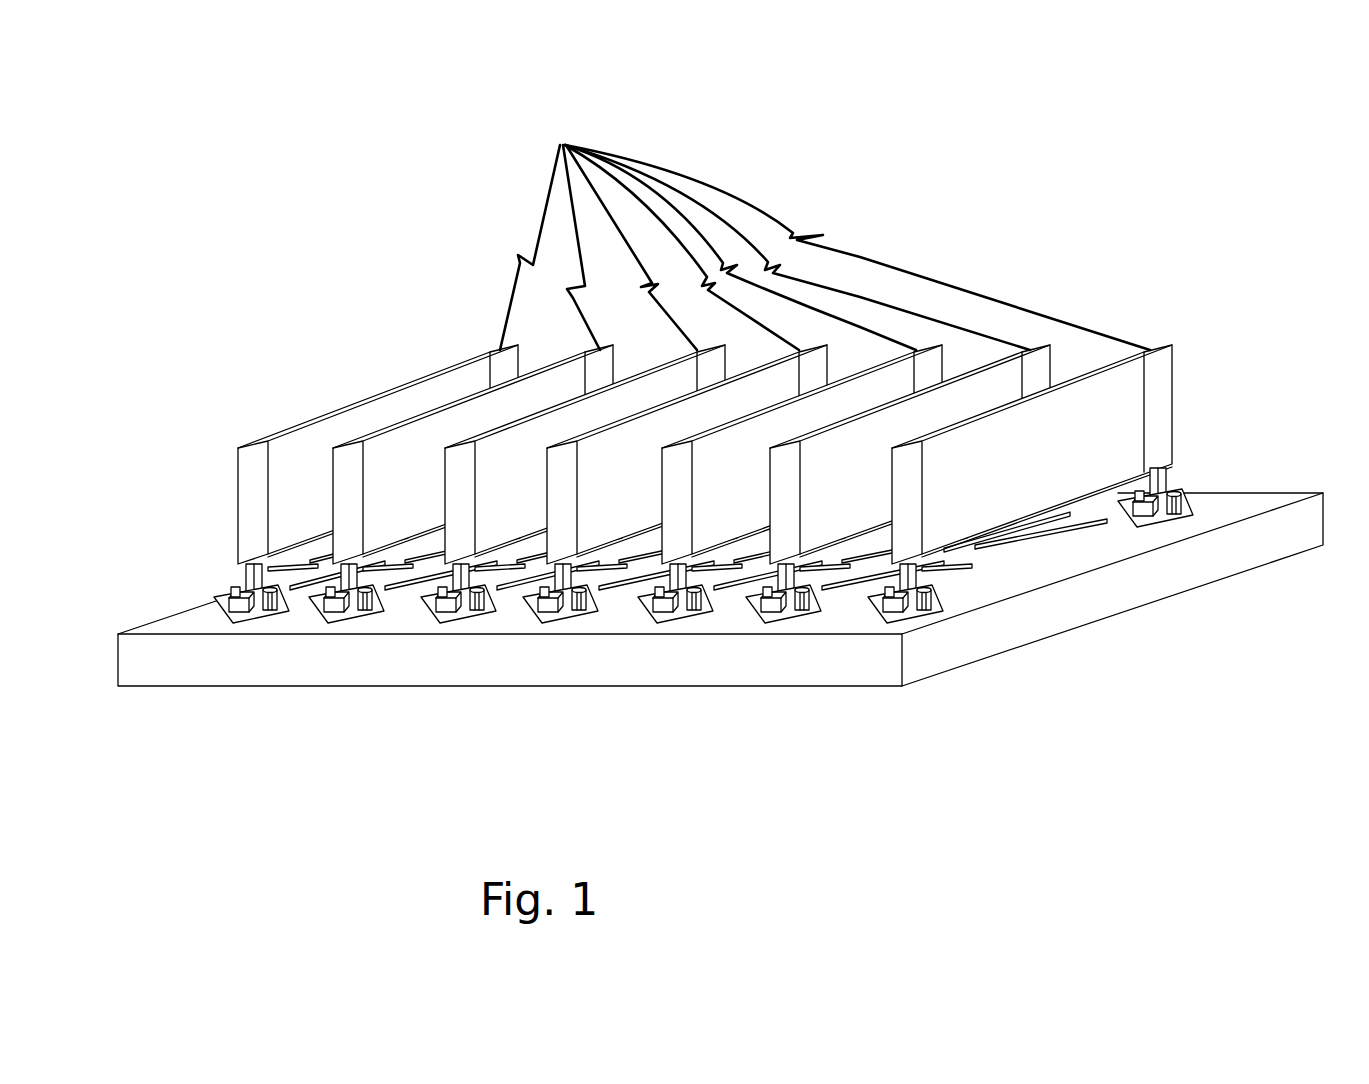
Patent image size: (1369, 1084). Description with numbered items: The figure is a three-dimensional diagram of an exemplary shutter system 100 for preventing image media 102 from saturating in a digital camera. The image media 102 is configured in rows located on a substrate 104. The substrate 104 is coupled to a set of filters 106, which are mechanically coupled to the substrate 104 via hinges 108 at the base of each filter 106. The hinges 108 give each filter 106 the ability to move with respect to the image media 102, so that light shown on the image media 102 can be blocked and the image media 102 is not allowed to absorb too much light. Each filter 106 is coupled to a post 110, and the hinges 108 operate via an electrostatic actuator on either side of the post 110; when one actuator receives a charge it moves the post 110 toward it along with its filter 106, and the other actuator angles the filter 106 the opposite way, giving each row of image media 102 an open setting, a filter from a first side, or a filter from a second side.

The shutter system 100 is at (701, 457).
The image media 102 is at (305, 597).
The substrate 104 is at (911, 683).
The filters 106 is at (1013, 130).
The hinges 108 is at (232, 607).
The post 110 is at (243, 583).